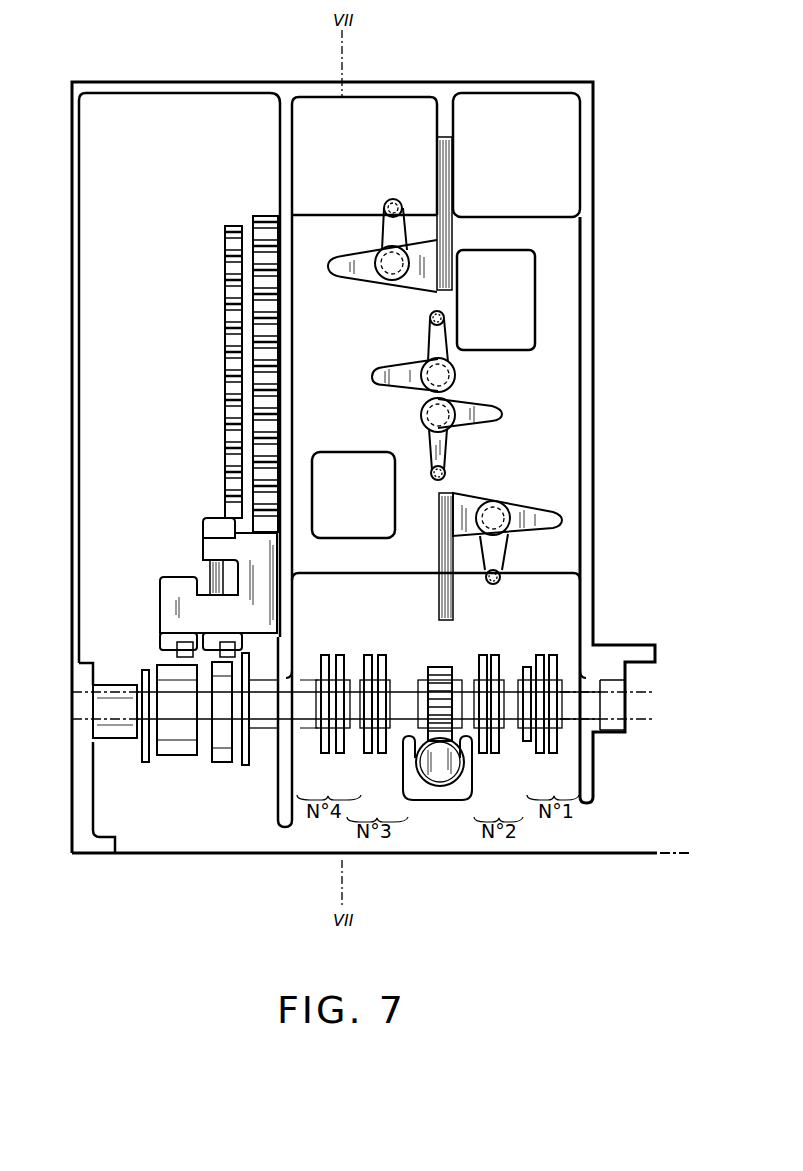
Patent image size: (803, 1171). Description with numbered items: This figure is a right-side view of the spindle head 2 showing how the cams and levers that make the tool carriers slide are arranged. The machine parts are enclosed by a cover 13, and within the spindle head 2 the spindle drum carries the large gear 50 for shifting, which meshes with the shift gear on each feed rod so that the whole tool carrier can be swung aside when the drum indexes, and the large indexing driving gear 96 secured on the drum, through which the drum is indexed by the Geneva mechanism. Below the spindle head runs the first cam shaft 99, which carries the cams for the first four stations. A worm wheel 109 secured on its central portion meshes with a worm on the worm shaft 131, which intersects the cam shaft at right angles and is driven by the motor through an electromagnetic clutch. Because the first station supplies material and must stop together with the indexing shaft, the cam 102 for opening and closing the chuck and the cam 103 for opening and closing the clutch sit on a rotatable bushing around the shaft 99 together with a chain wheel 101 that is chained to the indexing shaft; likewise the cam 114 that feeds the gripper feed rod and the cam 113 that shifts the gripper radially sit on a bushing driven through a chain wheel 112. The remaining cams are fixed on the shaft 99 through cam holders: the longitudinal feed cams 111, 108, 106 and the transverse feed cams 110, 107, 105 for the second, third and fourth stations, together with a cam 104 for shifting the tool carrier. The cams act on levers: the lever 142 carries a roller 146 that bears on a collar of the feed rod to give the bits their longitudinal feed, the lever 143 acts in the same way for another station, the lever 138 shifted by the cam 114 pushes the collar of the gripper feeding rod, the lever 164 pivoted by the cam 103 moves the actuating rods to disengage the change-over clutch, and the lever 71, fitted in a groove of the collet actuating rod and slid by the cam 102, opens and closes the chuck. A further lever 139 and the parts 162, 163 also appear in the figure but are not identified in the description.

The cover 13 is at (157, 88).
The spindle head 2 is at (282, 138).
The large gear for shifting 50 is at (263, 216).
The large indexing driving gear 96 is at (223, 242).
The lever 142 is at (390, 223).
The lever 143 is at (433, 333).
The lever 139 is at (480, 410).
The lever 138 is at (530, 517).
The roller 146 is at (478, 578).
The lever 164 is at (212, 520).
The lever 71 is at (163, 580).
The bearing block 163 is at (212, 640).
The bearing block 162 is at (167, 642).
The first cam shaft 99 is at (113, 743).
The chain wheel 101 is at (148, 753).
The cam for opening and closing the chuck 102 is at (178, 758).
The cam for opening and closing the clutch 103 is at (217, 763).
The cam for shifting the tool carrier 104 is at (250, 753).
The transverse feed cam 105 is at (323, 755).
The longitudinal feed cam 106 is at (340, 755).
The transverse feed cam 107 is at (365, 762).
The longitudinal feed cam 108 is at (382, 762).
The worm wheel 109 is at (435, 665).
The transverse feed cam 110 is at (482, 762).
The longitudinal feed cam 111 is at (495, 762).
The chain wheel 112 is at (528, 665).
The cam for making the gripper shift in the radial direction 113 is at (537, 755).
The cam for applying a feed movement to the gripper feed rod 114 is at (553, 755).
The worm shaft 131 is at (440, 773).